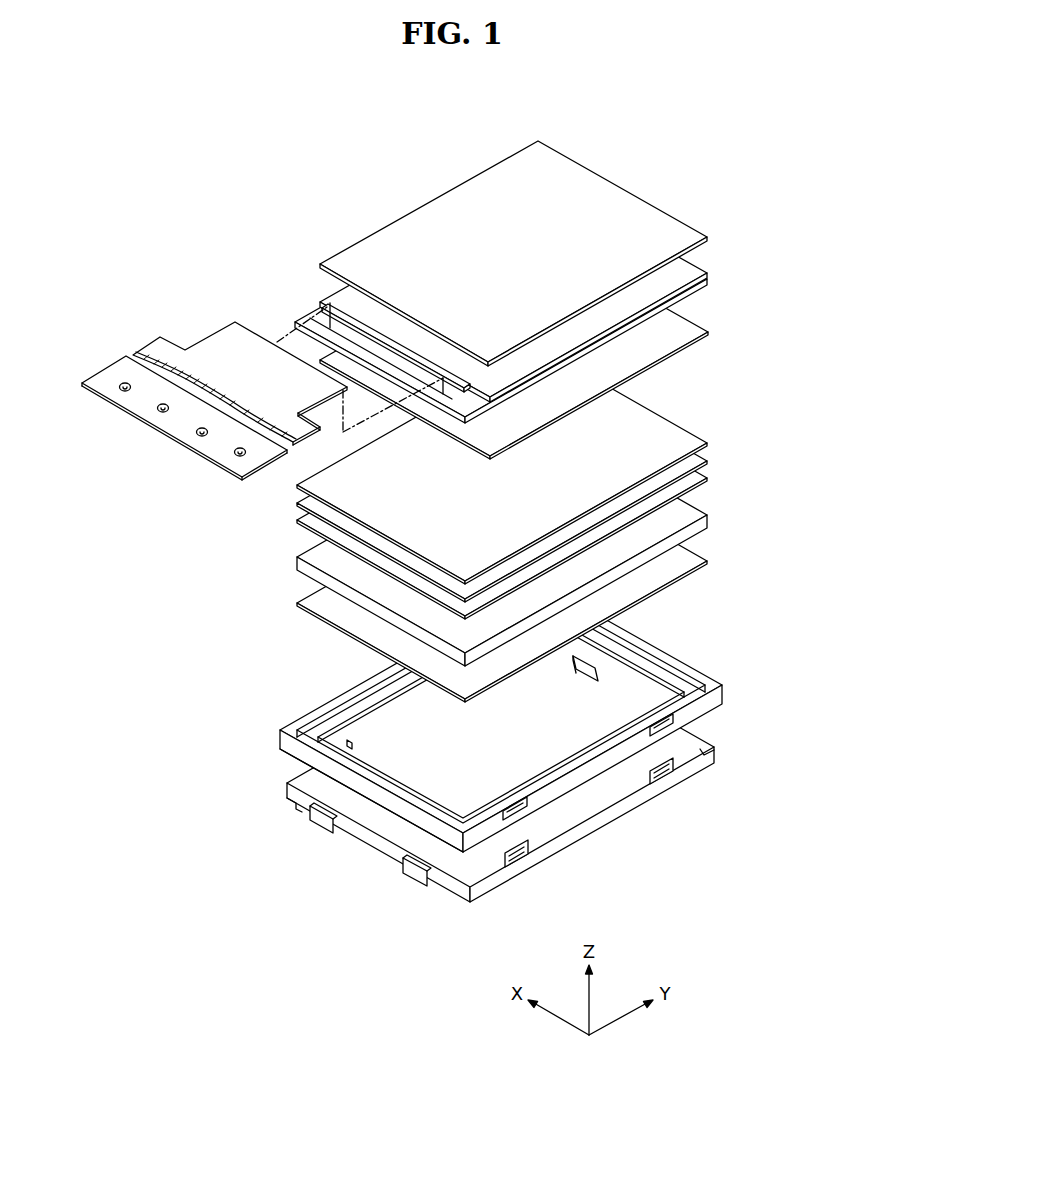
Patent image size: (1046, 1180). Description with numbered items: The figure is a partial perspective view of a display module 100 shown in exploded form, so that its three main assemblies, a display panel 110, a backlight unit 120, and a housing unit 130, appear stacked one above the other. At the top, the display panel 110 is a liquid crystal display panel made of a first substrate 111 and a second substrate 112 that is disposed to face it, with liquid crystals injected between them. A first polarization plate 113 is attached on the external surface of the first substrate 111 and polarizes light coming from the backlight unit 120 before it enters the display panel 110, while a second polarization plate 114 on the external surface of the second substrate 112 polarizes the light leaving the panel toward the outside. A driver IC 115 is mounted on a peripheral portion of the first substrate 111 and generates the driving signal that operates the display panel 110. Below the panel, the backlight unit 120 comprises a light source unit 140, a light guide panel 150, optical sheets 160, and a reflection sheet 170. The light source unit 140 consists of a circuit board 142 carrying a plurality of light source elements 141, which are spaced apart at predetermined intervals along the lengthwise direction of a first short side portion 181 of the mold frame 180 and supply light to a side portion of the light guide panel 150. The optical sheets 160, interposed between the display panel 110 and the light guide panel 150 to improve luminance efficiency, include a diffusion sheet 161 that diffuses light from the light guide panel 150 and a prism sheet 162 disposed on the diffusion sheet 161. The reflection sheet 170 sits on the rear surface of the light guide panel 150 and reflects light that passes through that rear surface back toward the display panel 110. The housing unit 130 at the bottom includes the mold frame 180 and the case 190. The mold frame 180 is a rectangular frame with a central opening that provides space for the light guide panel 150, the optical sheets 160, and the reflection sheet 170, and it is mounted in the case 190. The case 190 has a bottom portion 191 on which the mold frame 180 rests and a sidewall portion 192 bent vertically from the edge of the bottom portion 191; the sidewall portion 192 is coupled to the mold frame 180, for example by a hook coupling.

The display module 100 is at (352, 195).
The display panel 110 is at (541, 305).
The first substrate 111 is at (707, 283).
The second substrate 112 is at (707, 272).
The first polarization plate 113 is at (707, 330).
The second polarization plate 114 is at (690, 238).
The driver IC 115 is at (328, 312).
The backlight unit 120 is at (559, 524).
The housing unit 130 is at (523, 742).
The light source unit 140 is at (155, 436).
The light source elements 141 is at (202, 438).
The circuit board 142 is at (184, 410).
The light guide panel 150 is at (706, 519).
The optical sheets 160 is at (559, 483).
The diffusion sheet 161 is at (707, 479).
The prism sheet 162 is at (777, 492).
The reflection sheet 170 is at (707, 562).
The mold frame 180 is at (498, 717).
The first short side portion 181 is at (338, 772).
The case 190 is at (529, 772).
The bottom portion 191 is at (395, 847).
The sidewall portion 192 is at (563, 838).